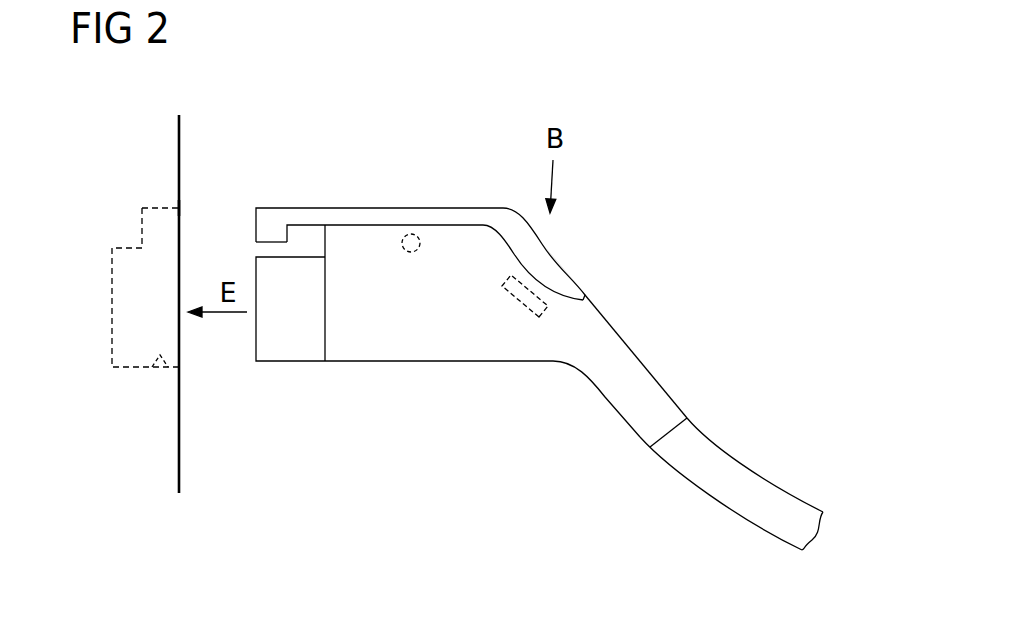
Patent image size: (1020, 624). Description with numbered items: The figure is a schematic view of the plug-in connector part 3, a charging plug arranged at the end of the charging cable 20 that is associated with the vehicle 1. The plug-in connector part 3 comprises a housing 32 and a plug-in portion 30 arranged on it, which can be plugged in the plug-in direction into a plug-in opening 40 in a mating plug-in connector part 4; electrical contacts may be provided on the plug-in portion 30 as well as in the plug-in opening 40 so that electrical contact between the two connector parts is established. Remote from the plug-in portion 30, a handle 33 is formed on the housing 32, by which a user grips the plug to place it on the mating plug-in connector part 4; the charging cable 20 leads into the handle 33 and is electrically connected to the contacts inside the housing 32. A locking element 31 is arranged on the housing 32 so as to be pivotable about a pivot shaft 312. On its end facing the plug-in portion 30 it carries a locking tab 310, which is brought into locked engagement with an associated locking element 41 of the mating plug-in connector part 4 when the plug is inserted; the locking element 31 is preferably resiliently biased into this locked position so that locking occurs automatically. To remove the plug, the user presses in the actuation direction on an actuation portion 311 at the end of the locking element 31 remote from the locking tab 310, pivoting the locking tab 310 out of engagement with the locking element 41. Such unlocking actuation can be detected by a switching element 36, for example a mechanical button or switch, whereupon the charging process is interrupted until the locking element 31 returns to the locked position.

The vehicle 1 is at (192, 138).
The locking element of the mating plug-in connector part 41 is at (192, 201).
The mating plug-in connector part 4 is at (142, 404).
The plug-in opening 40 is at (160, 355).
The plug-in connector part 3 is at (448, 393).
The plug-in portion 30 is at (290, 363).
The locking element 31 is at (367, 216).
The locking tab 310 is at (273, 222).
The actuation portion 311 is at (552, 267).
The pivot shaft 312 is at (416, 236).
The housing 32 is at (393, 345).
The handle 33 is at (648, 395).
The switching element 36 is at (547, 310).
The charging cable 20 is at (720, 492).